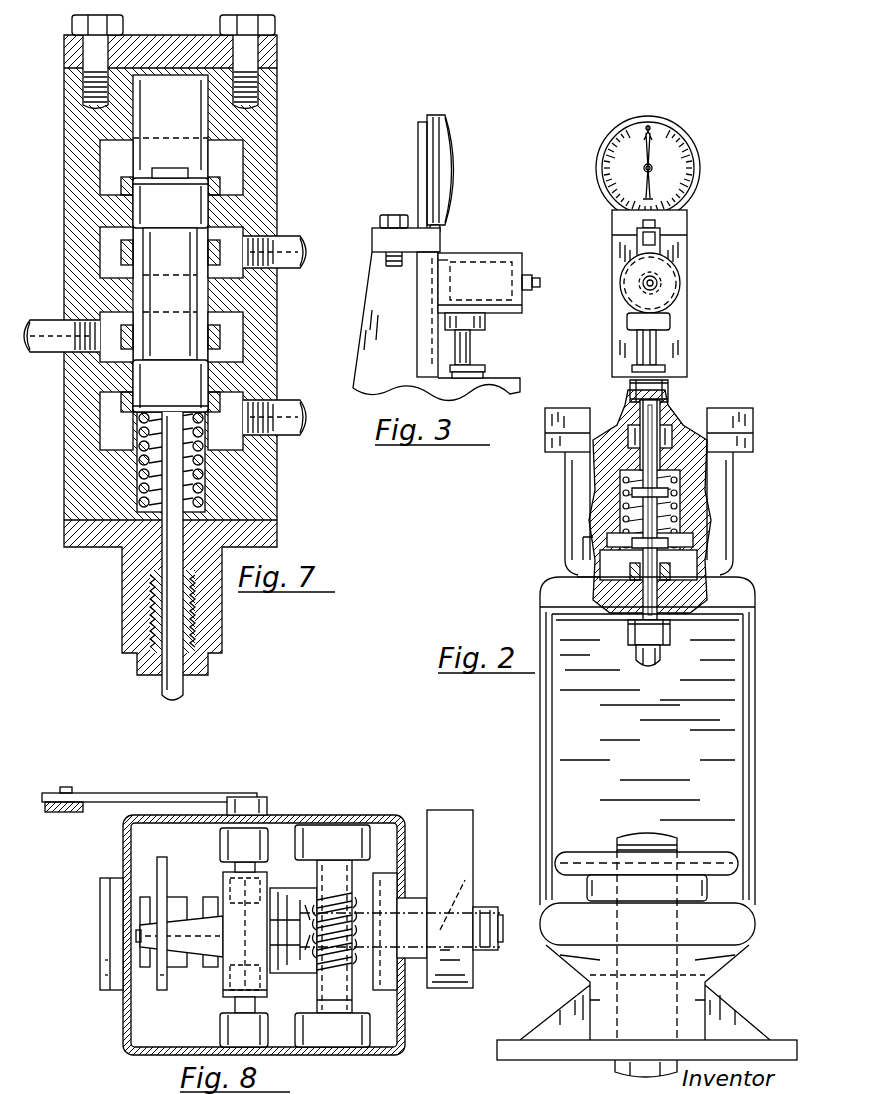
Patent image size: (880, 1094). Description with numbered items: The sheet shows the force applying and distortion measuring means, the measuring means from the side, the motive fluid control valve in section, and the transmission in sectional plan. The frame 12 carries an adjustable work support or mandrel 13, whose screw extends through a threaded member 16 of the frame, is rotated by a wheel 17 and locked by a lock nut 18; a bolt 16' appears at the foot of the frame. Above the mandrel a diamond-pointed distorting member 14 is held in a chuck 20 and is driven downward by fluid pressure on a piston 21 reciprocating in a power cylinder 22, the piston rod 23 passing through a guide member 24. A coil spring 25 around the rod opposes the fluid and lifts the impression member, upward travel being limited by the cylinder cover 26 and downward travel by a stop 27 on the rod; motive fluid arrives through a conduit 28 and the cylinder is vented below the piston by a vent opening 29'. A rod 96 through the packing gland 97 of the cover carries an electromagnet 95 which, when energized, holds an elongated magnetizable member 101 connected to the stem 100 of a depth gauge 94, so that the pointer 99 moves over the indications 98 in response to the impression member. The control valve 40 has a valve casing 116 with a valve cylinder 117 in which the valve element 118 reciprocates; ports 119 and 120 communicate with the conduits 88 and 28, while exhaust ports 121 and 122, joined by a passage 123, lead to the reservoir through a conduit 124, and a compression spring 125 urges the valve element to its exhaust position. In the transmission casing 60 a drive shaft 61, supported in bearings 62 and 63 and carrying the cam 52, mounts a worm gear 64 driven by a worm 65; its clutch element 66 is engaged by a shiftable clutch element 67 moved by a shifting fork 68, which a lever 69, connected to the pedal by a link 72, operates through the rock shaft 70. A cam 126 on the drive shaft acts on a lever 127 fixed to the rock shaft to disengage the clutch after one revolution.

In FIG. 2, the frame 12 is at (730, 772).
In FIG. 2, the work support or mandrel 13 is at (652, 833).
In FIG. 2, the distorting member 14 is at (643, 662).
In FIG. 2, the threaded member 16 is at (647, 955).
In FIG. 2, the base bolt 16' is at (616, 1070).
In FIG. 2, the wheel 17 is at (735, 862).
In FIG. 2, the lock nut 18 is at (708, 887).
In FIG. 2, the chuck 20 is at (666, 655).
In FIG. 2, the piston 21 is at (690, 488).
In FIG. 2, the power cylinder 22 is at (720, 455).
In FIG. 2, the piston rod 23 is at (690, 560).
In FIG. 2, the guide member 24 is at (578, 572).
In FIG. 2, the coil spring 25 is at (677, 517).
In FIG. 2, the cylinder cover 26 is at (710, 417).
In FIG. 2, the stop 27 is at (683, 538).
In FIG. 7, the conduit 28 is at (44, 325).
In FIG. 2, the vent opening 29' is at (566, 541).
In FIG. 7, the control valve 40 is at (318, 528).
In FIG. 8, the cam 52 is at (458, 812).
In FIG. 8, the transmission casing 60 is at (305, 1050).
In FIG. 8, the drive shaft 61 is at (478, 908).
In FIG. 8, the bearing 62 is at (381, 895).
In FIG. 8, the bearing 63 is at (112, 885).
In FIG. 8, the worm gear 64 is at (350, 993).
In FIG. 8, the worm 65 is at (318, 965).
In FIG. 8, the clutch element 66 is at (318, 898).
In FIG. 8, the shiftable clutch element 67 is at (283, 895).
In FIG. 8, the shifting fork 68 is at (222, 1000).
In FIG. 8, the lever 69 is at (125, 795).
In FIG. 8, the rock shaft 70 is at (230, 872).
In FIG. 8, the link 72 is at (55, 813).
In FIG. 7, the conduit 88 is at (300, 248).
In FIG. 3, the depth gauge 94 is at (452, 152).
In FIG. 2, the depth gauge 94 is at (654, 161).
In FIG. 3, the electromagnet 95 is at (470, 262).
In FIG. 2, the electromagnet 95 is at (680, 283).
In FIG. 3, the rod 96 is at (474, 345).
In FIG. 2, the rod 96 is at (668, 392).
In FIG. 3, the packing gland 97 is at (484, 368).
In FIG. 2, the packing gland 97 is at (665, 368).
In FIG. 2, the characters or indications 98 is at (665, 140).
In FIG. 2, the pointer 99 is at (624, 150).
In FIG. 3, the stem or actuating member 100 is at (445, 227).
In FIG. 2, the stem or actuating member 100 is at (660, 222).
In FIG. 2, the magnetizable member 101 is at (660, 244).
In FIG. 7, the valve casing 116 is at (191, 355).
In FIG. 7, the valve cylinder 117 is at (152, 115).
In FIG. 7, the valve element 118 is at (180, 207).
In FIG. 7, the port 119 is at (225, 247).
In FIG. 7, the port 120 is at (225, 333).
In FIG. 7, the exhaust port 121 is at (232, 180).
In FIG. 7, the exhaust port 122 is at (233, 405).
In FIG. 7, the passage 123 is at (210, 290).
In FIG. 7, the conduit 124 is at (290, 430).
In FIG. 7, the compression spring 125 is at (140, 462).
In FIG. 8, the cam 126 is at (158, 870).
In FIG. 8, the lever 127 is at (183, 985).